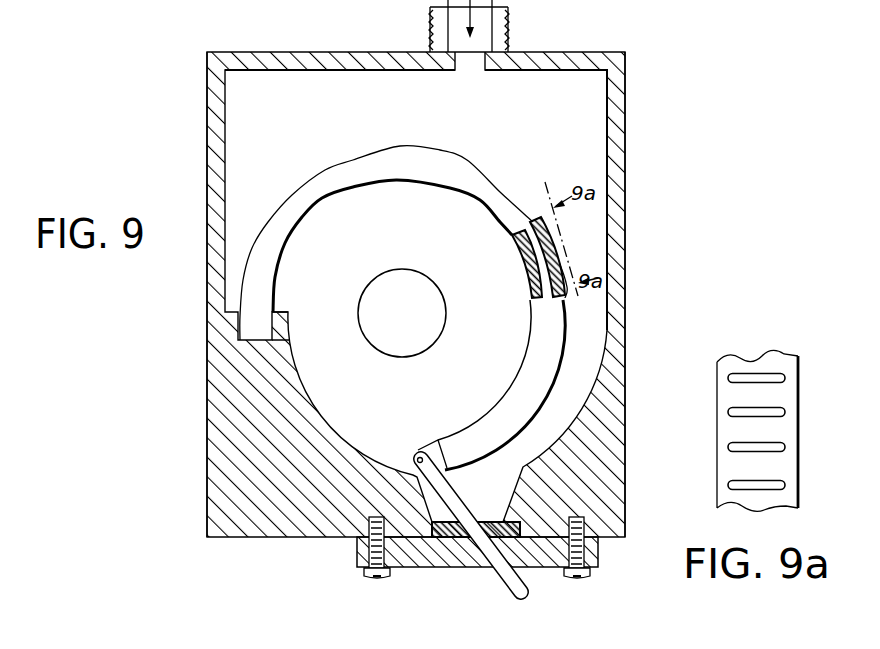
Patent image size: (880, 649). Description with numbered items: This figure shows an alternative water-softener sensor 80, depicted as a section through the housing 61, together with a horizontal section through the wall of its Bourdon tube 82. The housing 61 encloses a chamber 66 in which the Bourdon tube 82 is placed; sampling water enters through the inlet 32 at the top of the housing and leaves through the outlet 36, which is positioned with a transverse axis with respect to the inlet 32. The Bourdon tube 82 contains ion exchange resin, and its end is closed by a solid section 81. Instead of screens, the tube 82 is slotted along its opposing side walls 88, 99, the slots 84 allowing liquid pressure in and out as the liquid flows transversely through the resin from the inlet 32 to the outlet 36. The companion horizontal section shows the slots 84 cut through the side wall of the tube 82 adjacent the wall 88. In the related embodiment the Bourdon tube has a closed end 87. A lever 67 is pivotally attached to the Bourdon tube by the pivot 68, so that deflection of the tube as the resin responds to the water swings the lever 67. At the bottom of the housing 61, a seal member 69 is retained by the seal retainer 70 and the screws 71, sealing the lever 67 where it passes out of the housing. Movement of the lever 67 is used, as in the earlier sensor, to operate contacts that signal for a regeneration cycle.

In FIG. 9, the inlet 32 is at (508, 22).
In FIG. 9, the outlet 36 is at (430, 290).
In FIG. 9, the housing 61 is at (612, 186).
In FIG. 9, the chamber 66 is at (590, 128).
In FIG. 9, the lever 67 is at (455, 497).
In FIG. 9, the pivot 68 is at (421, 455).
In FIG. 9, the seal member 69 is at (472, 538).
In FIG. 9, the seal retainer 70 is at (358, 560).
In FIG. 9, the screws 71 is at (384, 576).
In FIG. 9, the sensor 80 is at (630, 236).
In FIG. 9, the solid section 81 is at (207, 372).
In FIG. 9, the Bourdon tube 82 is at (490, 178).
In FIG. 9a, the Bourdon tube 82 is at (795, 426).
In FIG. 9, the slots 84 is at (526, 276).
In FIG. 9a, the slots 84 is at (785, 378).
In FIG. 9, the closed end 87 is at (278, 326).
In FIG. 9, the side wall 88 is at (560, 388).
In FIG. 9a, the side wall 88 is at (800, 448).
In FIG. 9, the side wall 99 is at (525, 355).